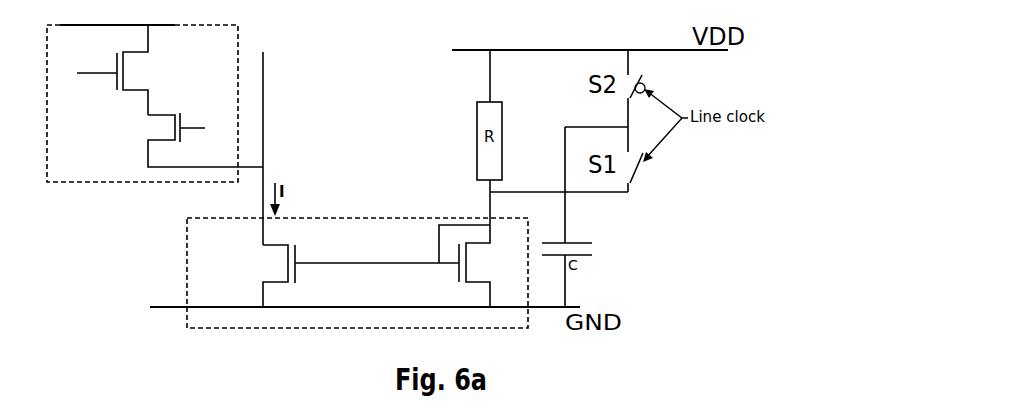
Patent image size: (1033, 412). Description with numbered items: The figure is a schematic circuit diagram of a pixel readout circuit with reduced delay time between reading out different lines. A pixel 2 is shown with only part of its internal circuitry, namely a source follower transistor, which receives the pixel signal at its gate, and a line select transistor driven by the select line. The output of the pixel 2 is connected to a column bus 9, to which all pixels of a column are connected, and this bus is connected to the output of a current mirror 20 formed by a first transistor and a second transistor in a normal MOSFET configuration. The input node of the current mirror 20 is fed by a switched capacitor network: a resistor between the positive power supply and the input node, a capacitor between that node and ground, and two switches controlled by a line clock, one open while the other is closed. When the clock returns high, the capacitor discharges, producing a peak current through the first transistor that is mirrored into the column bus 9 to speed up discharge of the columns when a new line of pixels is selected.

The pixel 2 is at (132, 182).
The column bus 9 is at (267, 60).
The current mirror 20 is at (187, 263).